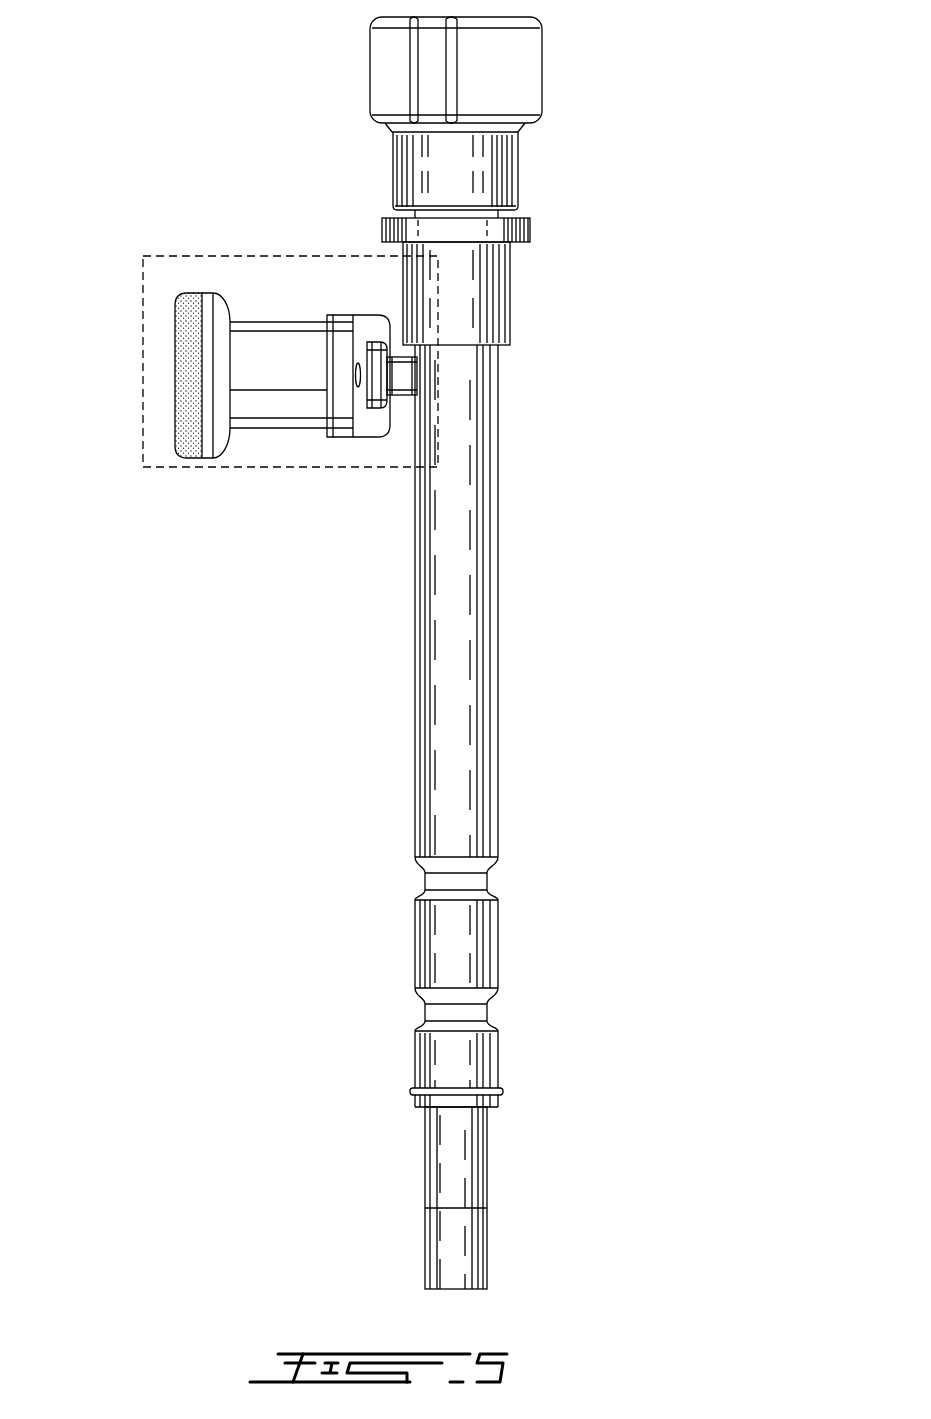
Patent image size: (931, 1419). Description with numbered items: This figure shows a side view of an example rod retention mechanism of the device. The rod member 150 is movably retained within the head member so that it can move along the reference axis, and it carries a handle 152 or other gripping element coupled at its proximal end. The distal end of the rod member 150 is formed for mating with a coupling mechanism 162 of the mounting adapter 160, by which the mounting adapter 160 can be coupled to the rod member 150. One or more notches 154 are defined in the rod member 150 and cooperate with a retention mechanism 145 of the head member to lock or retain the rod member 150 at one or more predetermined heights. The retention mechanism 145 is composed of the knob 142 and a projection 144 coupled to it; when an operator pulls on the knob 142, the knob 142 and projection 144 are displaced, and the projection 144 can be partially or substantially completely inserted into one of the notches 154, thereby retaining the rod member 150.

The knob 142 is at (192, 297).
The projection 144 is at (398, 383).
The retention mechanism 145 is at (242, 365).
The rod member 150 is at (470, 630).
The handle 152 is at (508, 65).
The notches 154 is at (437, 877).
The mounting adapter 160 is at (468, 1258).
The coupling mechanism 162 is at (521, 1160).